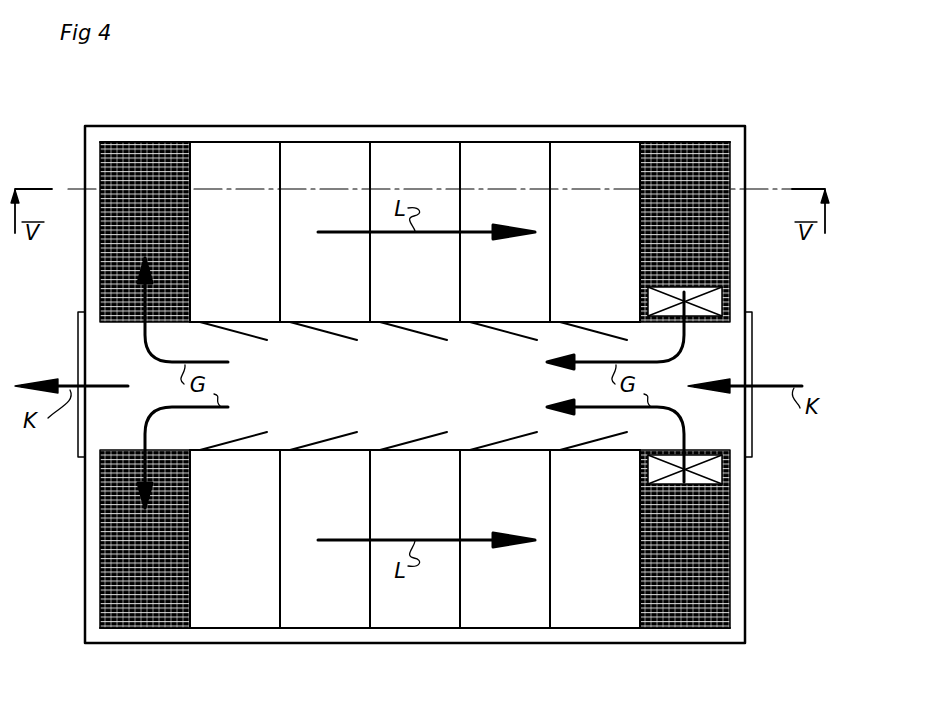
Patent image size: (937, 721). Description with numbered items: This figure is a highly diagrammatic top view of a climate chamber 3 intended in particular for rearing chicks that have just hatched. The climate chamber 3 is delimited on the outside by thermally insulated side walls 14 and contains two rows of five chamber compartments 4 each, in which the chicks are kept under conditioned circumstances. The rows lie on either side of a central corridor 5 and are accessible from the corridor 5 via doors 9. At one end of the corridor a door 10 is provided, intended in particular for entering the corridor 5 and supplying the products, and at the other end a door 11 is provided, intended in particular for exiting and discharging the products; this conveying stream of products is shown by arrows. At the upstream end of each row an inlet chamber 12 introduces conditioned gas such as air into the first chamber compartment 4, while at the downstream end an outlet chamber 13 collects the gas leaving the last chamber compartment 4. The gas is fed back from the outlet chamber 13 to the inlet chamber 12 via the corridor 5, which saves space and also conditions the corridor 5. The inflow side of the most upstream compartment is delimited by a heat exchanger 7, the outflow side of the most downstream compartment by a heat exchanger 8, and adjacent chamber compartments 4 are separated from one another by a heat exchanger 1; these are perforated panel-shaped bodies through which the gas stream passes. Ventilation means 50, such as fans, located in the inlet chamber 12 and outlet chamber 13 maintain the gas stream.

The climate chamber 3 is at (765, 95).
The thermally insulated side walls 14 is at (93, 151).
The outlet chamber 13 is at (152, 160).
The inlet chamber 12 is at (710, 160).
The heat exchanger 7 is at (205, 160).
The heat exchanger 8 is at (645, 160).
The heat exchanger 1 is at (292, 160).
The chamber compartment 4 is at (250, 160).
The door 9 is at (262, 336).
The ventilation means 50 is at (722, 300).
The corridor 5 is at (405, 393).
The door 11 is at (78, 330).
The door 10 is at (752, 343).